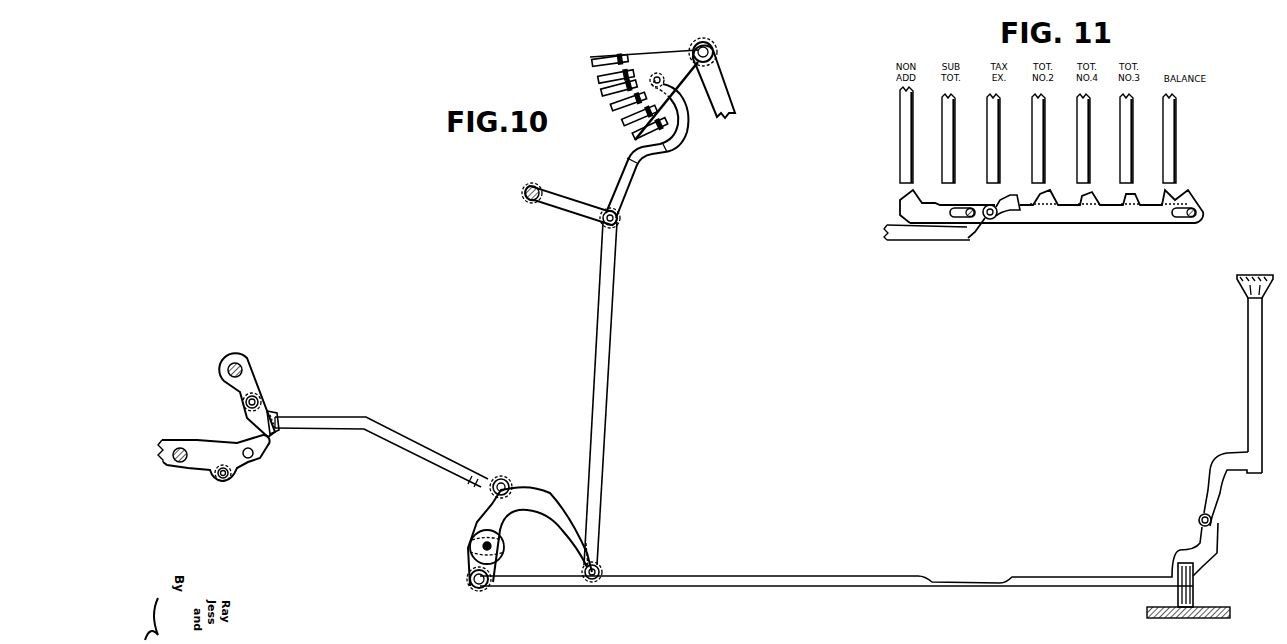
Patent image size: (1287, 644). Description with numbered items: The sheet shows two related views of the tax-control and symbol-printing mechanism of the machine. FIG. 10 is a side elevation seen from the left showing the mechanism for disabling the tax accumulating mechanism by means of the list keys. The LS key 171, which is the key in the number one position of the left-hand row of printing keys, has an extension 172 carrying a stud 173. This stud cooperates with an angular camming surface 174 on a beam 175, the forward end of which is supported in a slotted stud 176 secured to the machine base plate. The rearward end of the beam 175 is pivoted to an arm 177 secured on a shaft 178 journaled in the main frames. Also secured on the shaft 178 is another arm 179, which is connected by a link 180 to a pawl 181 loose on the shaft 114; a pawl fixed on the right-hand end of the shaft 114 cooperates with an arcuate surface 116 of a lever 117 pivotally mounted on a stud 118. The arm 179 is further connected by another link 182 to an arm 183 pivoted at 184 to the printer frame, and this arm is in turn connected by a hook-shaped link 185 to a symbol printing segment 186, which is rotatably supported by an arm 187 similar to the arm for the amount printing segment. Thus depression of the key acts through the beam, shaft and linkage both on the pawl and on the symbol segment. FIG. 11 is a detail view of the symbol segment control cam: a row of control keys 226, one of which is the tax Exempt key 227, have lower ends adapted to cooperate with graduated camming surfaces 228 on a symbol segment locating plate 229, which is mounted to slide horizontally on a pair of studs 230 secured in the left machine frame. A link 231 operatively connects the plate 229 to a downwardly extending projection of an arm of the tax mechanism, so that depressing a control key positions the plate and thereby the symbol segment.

In FIG. 10, the shaft 114 is at (247, 367).
In FIG. 10, the arcuate surface 116 is at (233, 438).
In FIG. 10, the lever 117 is at (218, 476).
In FIG. 10, the stud 118 is at (178, 467).
In FIG. 10, the LS key 171 is at (1250, 404).
In FIG. 10, the extension 172 is at (1217, 478).
In FIG. 10, the stud 173 is at (1199, 518).
In FIG. 10, the angular camming surface 174 is at (1200, 535).
In FIG. 10, the beam 175 is at (638, 580).
In FIG. 10, the slotted stud 176 is at (1194, 597).
In FIG. 10, the arm 177 is at (491, 570).
In FIG. 10, the shaft 178 is at (500, 545).
In FIG. 10, the arm 179 is at (542, 492).
In FIG. 10, the link 180 is at (344, 422).
In FIG. 10, the pawl 181 is at (276, 414).
In FIG. 10, the link 182 is at (603, 266).
In FIG. 10, the arm 183 is at (556, 208).
In FIG. 10, the pivot 184 is at (526, 192).
In FIG. 10, the hook-shaped link 185 is at (660, 150).
In FIG. 10, the symbol printing segment 186 is at (672, 55).
In FIG. 10, the arm 187 is at (718, 92).
In FIG. 11, the control keys 226 is at (950, 124).
In FIG. 11, the tax Exempt key 227 is at (988, 171).
In FIG. 11, the graduated camming surfaces 228 is at (1118, 206).
In FIG. 11, the symbol segment locating plate 229 is at (1103, 222).
In FIG. 11, the studs 230 is at (972, 218).
In FIG. 11, the link 231 is at (915, 237).